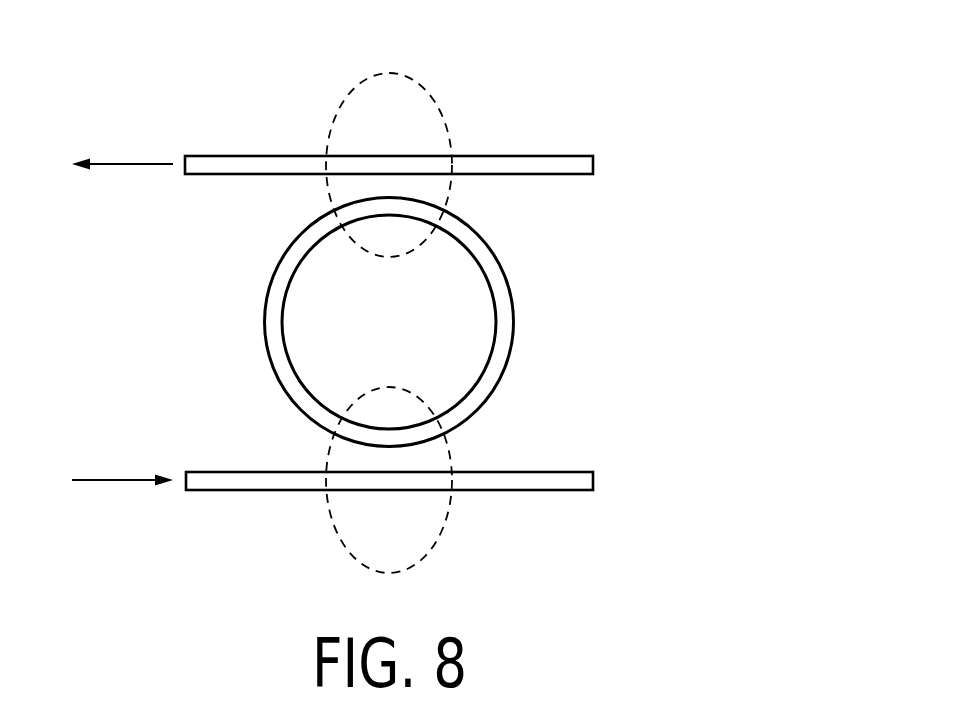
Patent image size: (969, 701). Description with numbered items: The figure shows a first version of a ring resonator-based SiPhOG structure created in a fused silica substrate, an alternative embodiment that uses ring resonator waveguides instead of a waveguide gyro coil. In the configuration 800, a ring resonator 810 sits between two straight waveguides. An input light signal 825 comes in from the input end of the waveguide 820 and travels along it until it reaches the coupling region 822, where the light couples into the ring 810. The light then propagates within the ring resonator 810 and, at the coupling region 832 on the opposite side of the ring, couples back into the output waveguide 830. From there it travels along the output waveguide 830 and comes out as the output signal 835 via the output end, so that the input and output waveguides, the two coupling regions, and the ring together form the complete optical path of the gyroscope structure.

The configuration 800 is at (662, 47).
The ring resonator 810 is at (514, 319).
The waveguide 820 is at (518, 471).
The coupling region 822 is at (438, 542).
The input light signal 825 is at (118, 480).
The output waveguide 830 is at (519, 157).
The coupling region 832 is at (438, 102).
The output signal 835 is at (122, 164).